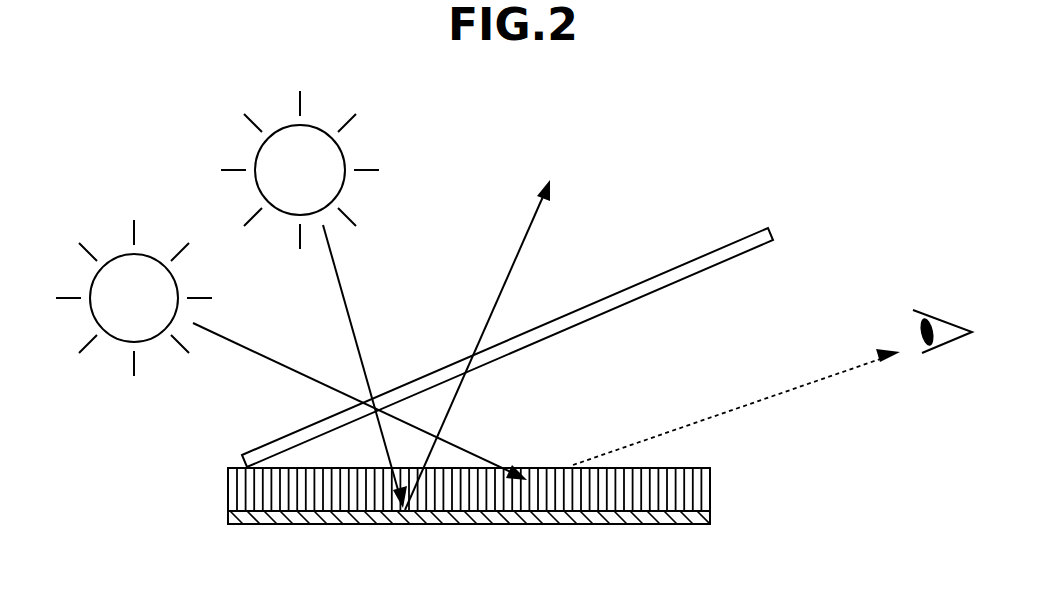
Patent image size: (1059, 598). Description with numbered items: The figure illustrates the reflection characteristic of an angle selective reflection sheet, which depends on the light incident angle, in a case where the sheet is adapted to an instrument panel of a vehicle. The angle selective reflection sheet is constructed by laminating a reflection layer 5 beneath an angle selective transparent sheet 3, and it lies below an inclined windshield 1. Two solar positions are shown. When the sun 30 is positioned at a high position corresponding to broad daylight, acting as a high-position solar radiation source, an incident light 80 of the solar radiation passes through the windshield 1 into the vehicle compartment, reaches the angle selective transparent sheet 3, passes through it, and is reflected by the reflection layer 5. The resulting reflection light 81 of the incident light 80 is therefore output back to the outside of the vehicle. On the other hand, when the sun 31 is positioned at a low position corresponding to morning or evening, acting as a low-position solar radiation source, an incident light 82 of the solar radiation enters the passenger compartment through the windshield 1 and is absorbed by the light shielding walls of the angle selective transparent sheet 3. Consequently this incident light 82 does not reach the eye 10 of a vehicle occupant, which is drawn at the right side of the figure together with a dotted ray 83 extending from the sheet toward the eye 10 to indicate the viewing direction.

The windshield 1 is at (687, 262).
The angle selective transparent sheet 3 is at (710, 491).
The reflection layer 5 is at (703, 525).
The observer's eye 10 is at (942, 316).
The sun 30 is at (304, 170).
The sun 31 is at (138, 298).
The incident light 80 is at (365, 366).
The reflection light 81 is at (477, 335).
The incident light 82 is at (360, 396).
The emitted light ray toward observer 83 is at (736, 407).